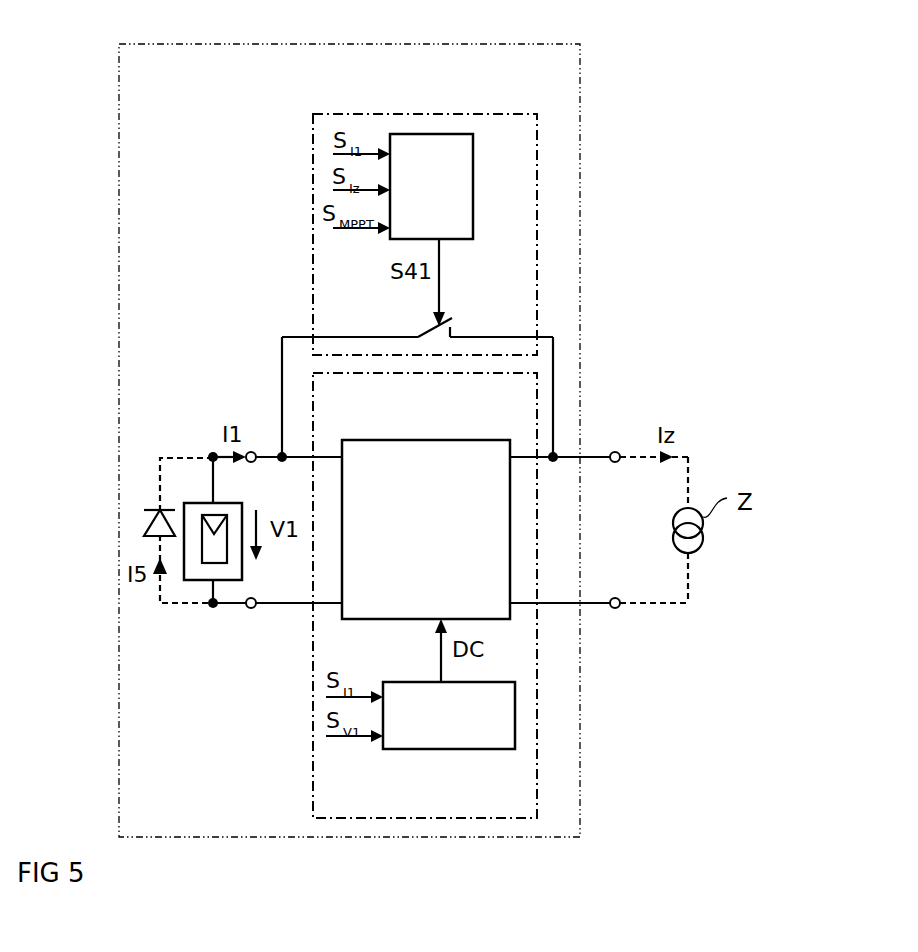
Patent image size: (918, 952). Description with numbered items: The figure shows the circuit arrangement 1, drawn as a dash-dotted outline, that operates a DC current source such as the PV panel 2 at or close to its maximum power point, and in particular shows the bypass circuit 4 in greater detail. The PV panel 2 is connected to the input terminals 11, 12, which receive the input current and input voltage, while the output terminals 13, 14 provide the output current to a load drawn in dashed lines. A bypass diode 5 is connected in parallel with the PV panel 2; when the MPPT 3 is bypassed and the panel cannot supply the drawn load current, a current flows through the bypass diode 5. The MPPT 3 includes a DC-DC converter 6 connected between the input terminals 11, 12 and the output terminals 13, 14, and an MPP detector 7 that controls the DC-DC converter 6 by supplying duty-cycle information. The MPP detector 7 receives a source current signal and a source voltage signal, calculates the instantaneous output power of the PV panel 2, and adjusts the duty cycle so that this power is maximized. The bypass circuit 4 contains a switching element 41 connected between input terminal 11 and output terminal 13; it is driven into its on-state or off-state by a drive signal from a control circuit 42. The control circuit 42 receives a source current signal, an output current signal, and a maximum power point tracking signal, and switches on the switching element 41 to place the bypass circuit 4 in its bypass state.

The circuit arrangement 1 is at (104, 60).
The PV panel 2 is at (203, 500).
The MPPT 3 is at (312, 717).
The bypass circuit 4 is at (429, 114).
The bypass diode 5 is at (152, 500).
The DC-DC converter 6 is at (422, 440).
The MPP detector 7 is at (447, 752).
The input terminal 11 is at (254, 447).
The input terminal 12 is at (253, 612).
The output terminal 13 is at (618, 447).
The output terminal 14 is at (618, 612).
The switching element 41 is at (455, 329).
The control circuit 42 is at (473, 169).